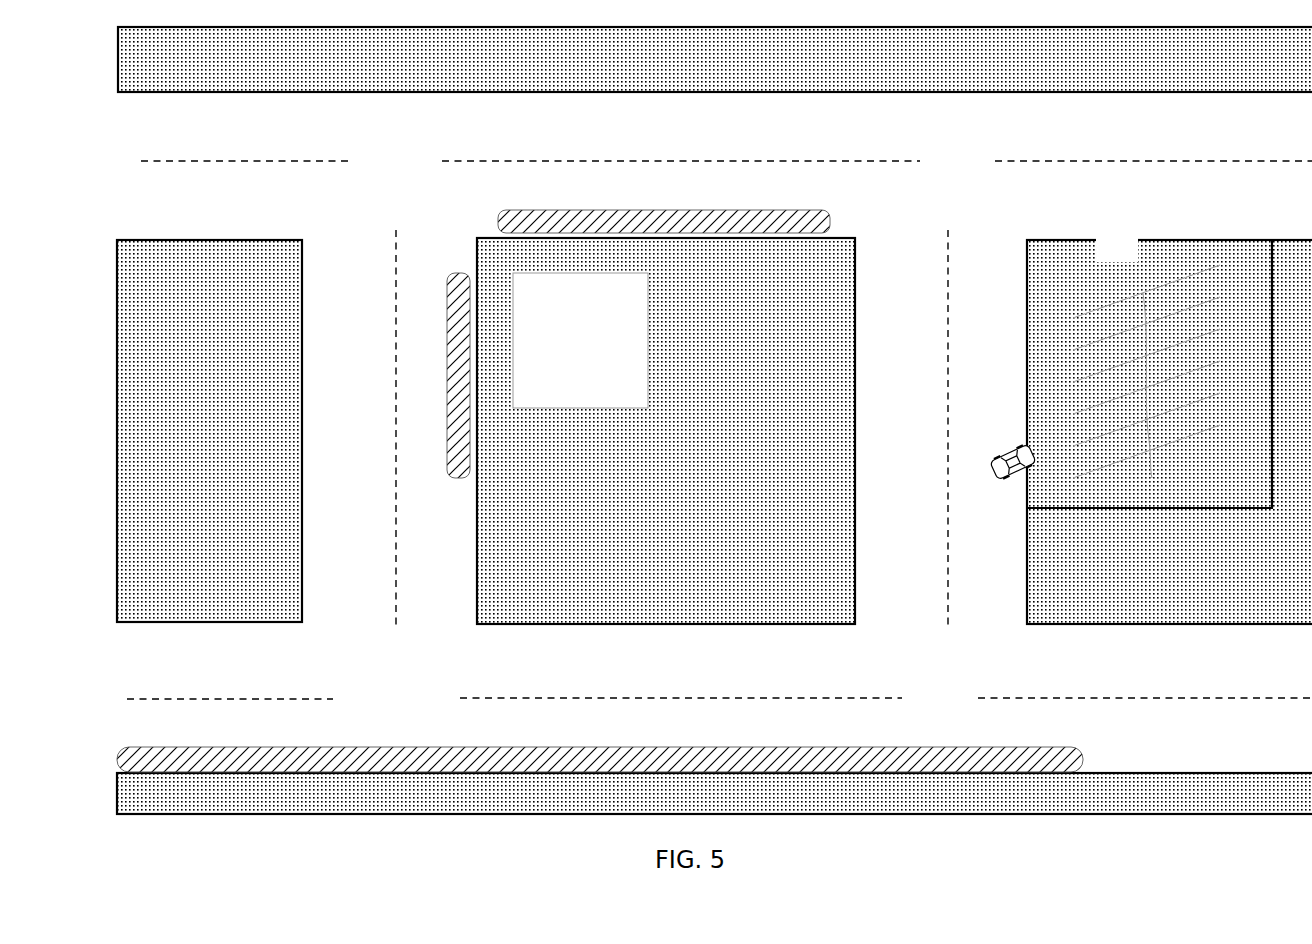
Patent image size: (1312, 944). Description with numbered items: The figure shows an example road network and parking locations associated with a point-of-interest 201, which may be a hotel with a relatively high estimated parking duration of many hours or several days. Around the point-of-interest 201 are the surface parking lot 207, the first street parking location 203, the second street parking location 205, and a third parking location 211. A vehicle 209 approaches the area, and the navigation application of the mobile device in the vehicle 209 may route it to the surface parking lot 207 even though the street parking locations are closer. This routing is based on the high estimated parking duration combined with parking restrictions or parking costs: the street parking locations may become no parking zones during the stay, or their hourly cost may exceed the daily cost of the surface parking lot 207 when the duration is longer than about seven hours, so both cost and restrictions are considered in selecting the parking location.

The point-of-interest 201 is at (604, 354).
The first street parking location 203 is at (500, 223).
The second street parking location 205 is at (978, 743).
The surface parking lot 207 is at (1098, 308).
The vehicle 209 is at (1005, 480).
The third parking location 211 is at (462, 270).